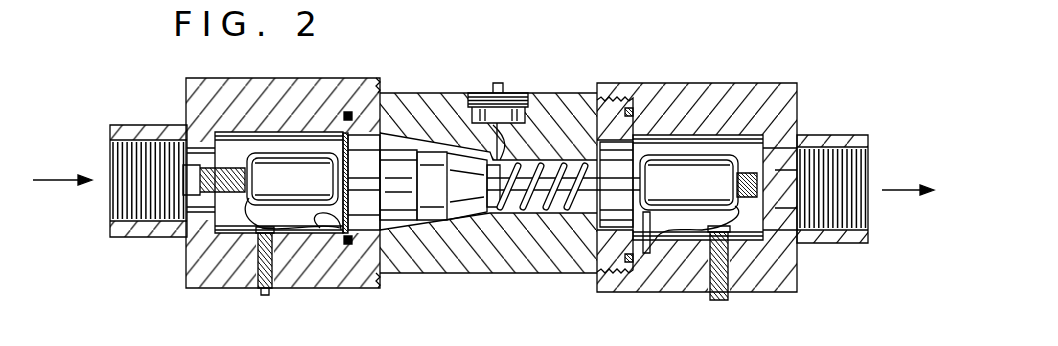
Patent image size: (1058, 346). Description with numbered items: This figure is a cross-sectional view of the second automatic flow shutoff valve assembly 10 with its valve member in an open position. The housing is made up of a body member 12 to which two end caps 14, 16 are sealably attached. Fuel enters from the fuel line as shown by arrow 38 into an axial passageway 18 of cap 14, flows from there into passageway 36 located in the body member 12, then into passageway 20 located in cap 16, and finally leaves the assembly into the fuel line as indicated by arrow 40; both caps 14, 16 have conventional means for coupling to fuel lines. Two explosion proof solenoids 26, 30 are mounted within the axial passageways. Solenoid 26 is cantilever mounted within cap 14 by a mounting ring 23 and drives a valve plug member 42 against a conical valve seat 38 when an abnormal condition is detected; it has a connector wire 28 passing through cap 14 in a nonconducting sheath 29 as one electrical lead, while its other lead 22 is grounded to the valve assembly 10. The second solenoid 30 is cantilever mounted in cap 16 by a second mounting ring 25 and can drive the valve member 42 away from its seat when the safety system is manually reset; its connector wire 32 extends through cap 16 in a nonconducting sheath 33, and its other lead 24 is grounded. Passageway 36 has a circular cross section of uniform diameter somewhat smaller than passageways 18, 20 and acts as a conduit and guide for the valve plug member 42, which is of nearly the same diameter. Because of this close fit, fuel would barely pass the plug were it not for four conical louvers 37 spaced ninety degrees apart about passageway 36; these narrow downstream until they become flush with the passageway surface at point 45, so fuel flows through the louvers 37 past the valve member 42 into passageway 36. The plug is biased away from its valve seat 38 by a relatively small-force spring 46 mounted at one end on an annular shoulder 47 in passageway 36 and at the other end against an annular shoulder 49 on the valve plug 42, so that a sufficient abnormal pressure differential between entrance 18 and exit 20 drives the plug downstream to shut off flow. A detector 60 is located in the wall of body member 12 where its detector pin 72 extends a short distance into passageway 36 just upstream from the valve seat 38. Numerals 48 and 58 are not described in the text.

The automatic flow shutoff valve assembly 10 is at (774, 79).
The body member 12 is at (510, 274).
The end cap 14 is at (354, 289).
The end cap 16 is at (652, 295).
The axial passageway 18 is at (118, 198).
The passageway 20 is at (868, 158).
The lead 22 is at (322, 231).
The mounting ring 23 is at (343, 128).
The lead 24 is at (621, 293).
The second mounting ring 25 is at (634, 112).
The solenoid 26 is at (265, 152).
The connector wire 28 is at (264, 296).
The nonconducting sheath 29 is at (250, 266).
The second solenoid 30 is at (720, 160).
The connector wire 32 is at (722, 301).
The nonconducting sheath 33 is at (738, 268).
The passageway 36 is at (411, 158).
The louvers 37 is at (372, 168).
The conical valve seat 38 is at (54, 179).
The arrow 40 is at (900, 191).
The valve plug member 42 is at (440, 214).
The point 45 is at (470, 214).
The spring 46 is at (548, 213).
The annular shoulder 47 is at (608, 150).
The O-ring seal 48 is at (349, 111).
The annular shoulder 49 is at (482, 219).
The push rod 58 is at (585, 214).
The detector 60 is at (509, 88).
The detector pin 72 is at (505, 138).